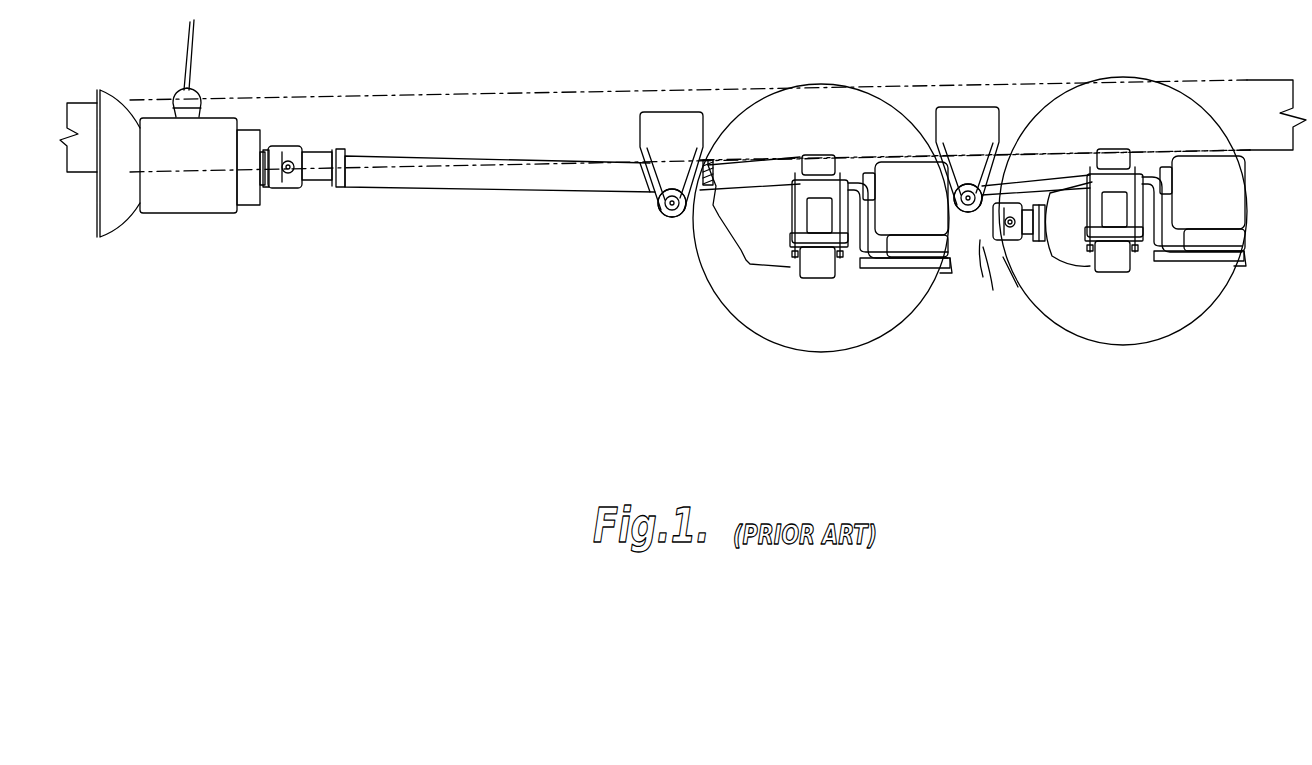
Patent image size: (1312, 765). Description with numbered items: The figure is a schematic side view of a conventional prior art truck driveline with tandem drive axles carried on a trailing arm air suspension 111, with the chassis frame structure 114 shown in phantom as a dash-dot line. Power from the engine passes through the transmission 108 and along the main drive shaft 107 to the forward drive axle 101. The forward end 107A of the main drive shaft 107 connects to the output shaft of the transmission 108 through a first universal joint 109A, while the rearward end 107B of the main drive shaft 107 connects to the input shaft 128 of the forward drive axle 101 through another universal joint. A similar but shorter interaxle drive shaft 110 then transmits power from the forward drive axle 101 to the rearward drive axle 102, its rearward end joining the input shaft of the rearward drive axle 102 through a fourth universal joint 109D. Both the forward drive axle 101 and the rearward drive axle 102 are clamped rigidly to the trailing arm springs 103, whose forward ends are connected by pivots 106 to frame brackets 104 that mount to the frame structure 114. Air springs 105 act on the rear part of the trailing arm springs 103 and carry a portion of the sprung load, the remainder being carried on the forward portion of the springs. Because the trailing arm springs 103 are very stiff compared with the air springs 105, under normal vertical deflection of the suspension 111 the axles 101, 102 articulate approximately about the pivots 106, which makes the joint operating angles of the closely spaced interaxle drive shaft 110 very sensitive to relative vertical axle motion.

The forward drive axle 101 is at (772, 233).
The rearward drive axle 102 is at (1113, 257).
The trailing arm springs 103 is at (903, 263).
The frame brackets 104 is at (657, 127).
The air springs 105 is at (919, 204).
The pivots 106 is at (668, 212).
The main drive shaft 107 is at (442, 177).
The forward end of the main drive shaft 107A is at (322, 152).
The rearward end of the main drive shaft 107B is at (645, 183).
The transmission 108 is at (196, 159).
The first universal joint 109A is at (292, 188).
The fourth universal joint 109D is at (1005, 242).
The interaxle drive shaft 110 is at (985, 215).
The suspension system 111 is at (870, 155).
The frame structure 114 is at (518, 92).
The input shaft of the forward drive axle 128 is at (708, 163).